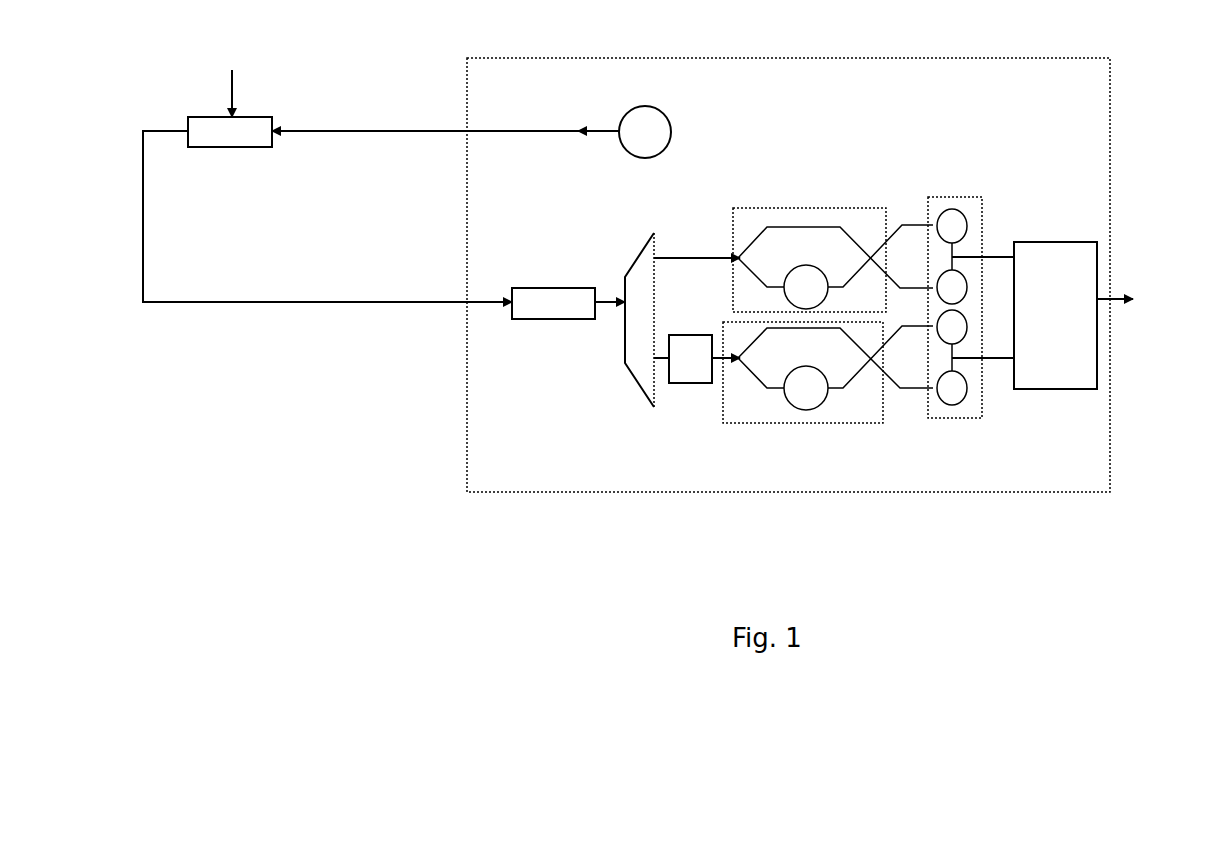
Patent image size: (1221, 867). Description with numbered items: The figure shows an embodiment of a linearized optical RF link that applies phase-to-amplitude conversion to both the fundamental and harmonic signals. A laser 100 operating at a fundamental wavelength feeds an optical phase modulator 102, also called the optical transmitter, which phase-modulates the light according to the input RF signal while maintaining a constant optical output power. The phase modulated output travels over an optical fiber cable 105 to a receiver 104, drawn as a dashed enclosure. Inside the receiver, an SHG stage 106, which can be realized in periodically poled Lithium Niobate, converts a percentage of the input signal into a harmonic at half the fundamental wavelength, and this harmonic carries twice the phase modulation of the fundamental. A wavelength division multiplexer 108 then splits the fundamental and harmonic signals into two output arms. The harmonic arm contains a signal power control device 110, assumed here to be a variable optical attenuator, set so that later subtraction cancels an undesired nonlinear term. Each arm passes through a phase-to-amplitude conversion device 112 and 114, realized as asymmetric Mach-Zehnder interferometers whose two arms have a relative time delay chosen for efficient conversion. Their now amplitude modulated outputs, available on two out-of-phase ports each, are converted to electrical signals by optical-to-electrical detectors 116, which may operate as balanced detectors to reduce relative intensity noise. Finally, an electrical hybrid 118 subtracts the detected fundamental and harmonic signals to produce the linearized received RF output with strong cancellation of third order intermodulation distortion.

The laser 100 is at (624, 117).
The optical phase modulator 102 is at (230, 109).
The receiver 104 is at (786, 293).
The optical fiber cable 105 is at (327, 236).
The SHG stage 106 is at (568, 323).
The wavelength division multiplexer 108 is at (671, 321).
The signal power control device 110 is at (703, 366).
The phase-to-amplitude conversion device 112 is at (833, 245).
The phase-to-amplitude conversion device 114 is at (828, 389).
The optical-to-electrical detectors 116 is at (971, 328).
The electrical hybrid 118 is at (1104, 302).